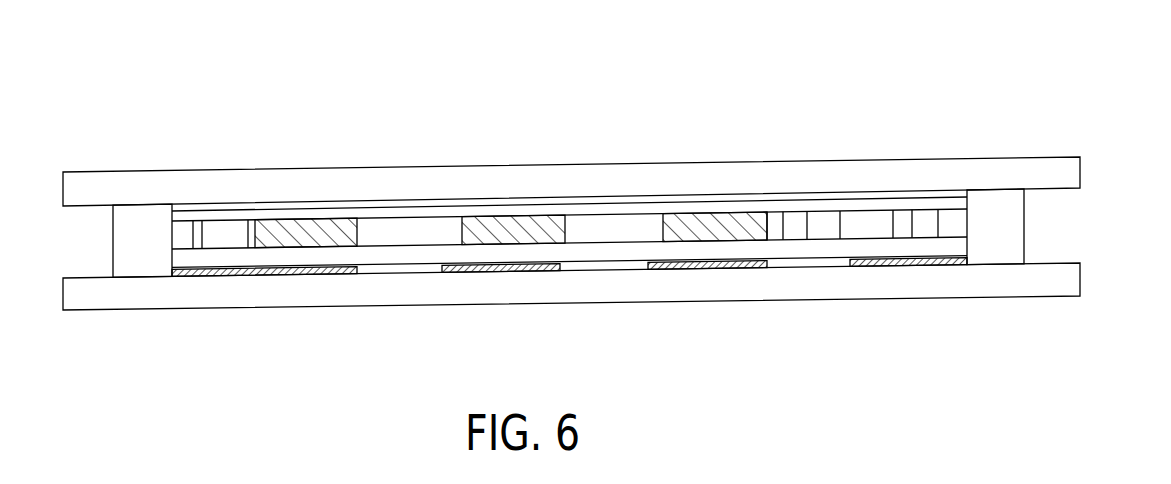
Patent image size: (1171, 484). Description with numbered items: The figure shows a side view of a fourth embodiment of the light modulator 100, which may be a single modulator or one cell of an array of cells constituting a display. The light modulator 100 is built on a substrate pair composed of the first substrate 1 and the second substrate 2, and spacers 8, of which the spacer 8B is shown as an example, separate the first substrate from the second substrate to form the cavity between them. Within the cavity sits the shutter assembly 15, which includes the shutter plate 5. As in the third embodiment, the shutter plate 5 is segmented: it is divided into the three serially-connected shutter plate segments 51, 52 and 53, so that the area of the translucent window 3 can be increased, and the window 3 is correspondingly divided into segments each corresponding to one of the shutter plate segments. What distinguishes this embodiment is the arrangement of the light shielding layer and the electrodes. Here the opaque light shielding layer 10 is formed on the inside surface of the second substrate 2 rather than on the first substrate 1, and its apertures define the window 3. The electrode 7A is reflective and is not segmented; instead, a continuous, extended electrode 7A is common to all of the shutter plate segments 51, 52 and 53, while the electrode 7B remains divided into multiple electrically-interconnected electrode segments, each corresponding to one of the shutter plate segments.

The light modulator 100 is at (915, 138).
The first substrate 1 is at (1042, 172).
The second substrate 2 is at (1050, 282).
The translucent window 3 is at (366, 292).
The shutter plate 5 is at (767, 68).
The first shutter plate segment 51 is at (312, 218).
The second shutter plate segment 52 is at (520, 216).
The third shutter plate segment 53 is at (720, 213).
The electrode 7A is at (405, 203).
The electrode 7B is at (410, 275).
The spacers 8 is at (1041, 227).
The spacer 8B is at (1000, 227).
The light shielding layer 10 is at (190, 268).
The shutter assembly 15 is at (958, 216).